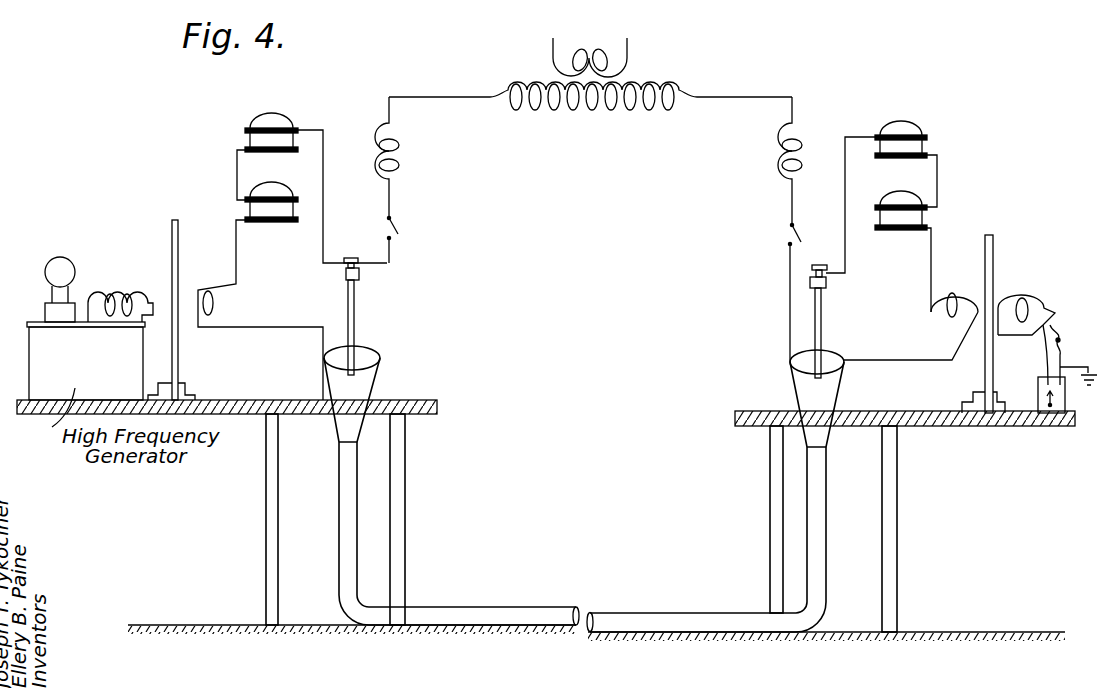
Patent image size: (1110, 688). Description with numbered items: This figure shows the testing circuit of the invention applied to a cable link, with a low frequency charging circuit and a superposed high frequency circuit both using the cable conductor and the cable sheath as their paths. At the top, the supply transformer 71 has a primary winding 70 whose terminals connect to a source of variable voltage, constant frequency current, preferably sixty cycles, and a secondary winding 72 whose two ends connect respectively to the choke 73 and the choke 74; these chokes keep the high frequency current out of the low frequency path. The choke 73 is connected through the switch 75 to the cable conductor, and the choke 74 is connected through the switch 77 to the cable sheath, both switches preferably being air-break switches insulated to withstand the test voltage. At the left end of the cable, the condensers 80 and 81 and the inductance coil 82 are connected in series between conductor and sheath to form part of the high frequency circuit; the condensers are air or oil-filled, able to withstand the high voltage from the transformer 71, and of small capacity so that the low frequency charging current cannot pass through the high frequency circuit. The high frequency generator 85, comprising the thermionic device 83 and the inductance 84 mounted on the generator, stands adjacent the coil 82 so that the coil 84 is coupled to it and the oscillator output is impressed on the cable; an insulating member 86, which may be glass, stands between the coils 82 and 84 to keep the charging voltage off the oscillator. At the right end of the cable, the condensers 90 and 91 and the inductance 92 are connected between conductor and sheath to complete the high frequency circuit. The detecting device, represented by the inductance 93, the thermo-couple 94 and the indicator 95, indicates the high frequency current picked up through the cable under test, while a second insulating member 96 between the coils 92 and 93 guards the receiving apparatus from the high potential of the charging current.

The primary winding 70 is at (580, 52).
The supply transformer 71 is at (640, 72).
The secondary winding 72 is at (590, 104).
The choke 73 is at (403, 158).
The choke 74 is at (835, 142).
The switch 75 is at (394, 218).
The switch 77 is at (790, 228).
The condenser 80 is at (288, 153).
The condenser 81 is at (296, 222).
The inductance coil 82 is at (215, 301).
The thermionic device 83 is at (58, 263).
The inductance 84 is at (140, 279).
The high frequency generator 85 is at (40, 342).
The insulating member 86 is at (173, 225).
The condenser 90 is at (887, 158).
The condenser 91 is at (888, 230).
The inductance 92 is at (948, 298).
The inductance 93 is at (1023, 300).
The thermo-couple 94 is at (1096, 322).
The indicator 95 is at (1062, 402).
The insulating member 96 is at (990, 250).